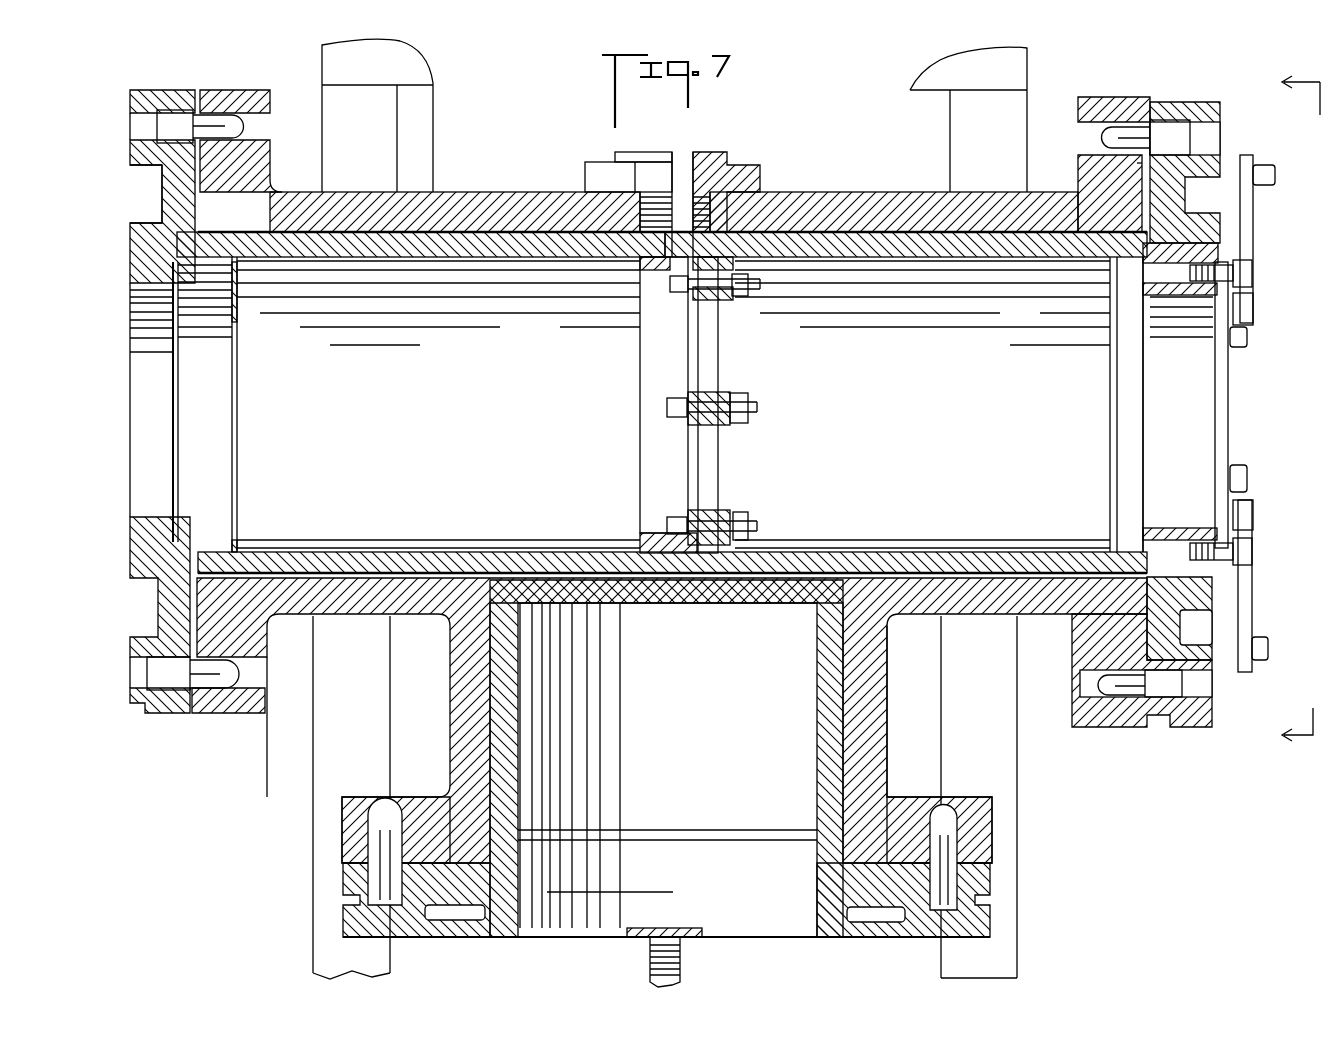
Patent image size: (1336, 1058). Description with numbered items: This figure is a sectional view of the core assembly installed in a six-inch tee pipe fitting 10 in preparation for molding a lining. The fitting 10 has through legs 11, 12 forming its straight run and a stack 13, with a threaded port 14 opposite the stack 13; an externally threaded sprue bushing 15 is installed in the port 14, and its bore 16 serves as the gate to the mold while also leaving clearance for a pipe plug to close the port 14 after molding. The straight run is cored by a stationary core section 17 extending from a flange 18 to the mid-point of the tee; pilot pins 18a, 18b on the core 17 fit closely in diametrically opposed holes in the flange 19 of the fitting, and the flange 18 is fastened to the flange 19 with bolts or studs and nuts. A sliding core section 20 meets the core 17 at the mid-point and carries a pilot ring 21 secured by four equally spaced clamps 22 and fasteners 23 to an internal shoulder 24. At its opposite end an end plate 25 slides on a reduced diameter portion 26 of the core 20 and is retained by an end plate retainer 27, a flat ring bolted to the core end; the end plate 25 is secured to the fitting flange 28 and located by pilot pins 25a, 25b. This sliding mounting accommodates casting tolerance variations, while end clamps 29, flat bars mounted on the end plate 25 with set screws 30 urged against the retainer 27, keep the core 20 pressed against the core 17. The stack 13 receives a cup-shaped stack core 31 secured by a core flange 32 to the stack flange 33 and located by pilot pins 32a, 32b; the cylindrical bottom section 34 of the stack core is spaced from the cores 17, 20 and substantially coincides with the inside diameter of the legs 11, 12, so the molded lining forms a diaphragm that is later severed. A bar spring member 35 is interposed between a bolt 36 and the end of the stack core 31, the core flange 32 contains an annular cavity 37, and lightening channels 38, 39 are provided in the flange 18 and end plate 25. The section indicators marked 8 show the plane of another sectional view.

The section line 8- 8 is at (1301, 414).
The fitting 10 is at (511, 162).
The through leg 11 is at (296, 194).
The through leg 12 is at (882, 197).
The stack 13 is at (915, 690).
The threaded port 14 is at (700, 212).
The sprue bushing 15 is at (752, 172).
The bore 16 is at (683, 162).
The stationary core section 17 is at (360, 250).
The flange 18 is at (135, 152).
The pilot pin 18a is at (178, 118).
The pilot pin 18b is at (160, 682).
The flange of the tee fitting 19 is at (256, 100).
The sliding core section 20 is at (892, 252).
The pilot ring 21 is at (644, 342).
The clamp 22 is at (724, 296).
The fastener 23 is at (750, 408).
The internal shoulder 24 is at (722, 350).
The end plate 25 is at (1218, 110).
The pilot pin 25a is at (1172, 128).
The pilot pin 25b is at (1165, 690).
The reduced diameter portion 26 is at (1222, 245).
The end plate retainer 27 is at (1222, 352).
The flange of the tee fitting 28 is at (1112, 108).
The end clamp 29 is at (1253, 200).
The set screw 30 is at (1250, 300).
The stack core 31 is at (817, 718).
The core flange 32 is at (985, 908).
The pilot pin 32a is at (378, 890).
The pilot pin 32b is at (946, 862).
The flange of the stack 33 is at (992, 824).
The cylindrical bottom section 34 is at (630, 578).
The bar spring member 35 is at (705, 937).
The bolt 36 is at (650, 965).
The annular cavity 37 is at (876, 924).
The channel 38 is at (138, 198).
The channel 39 is at (1196, 620).